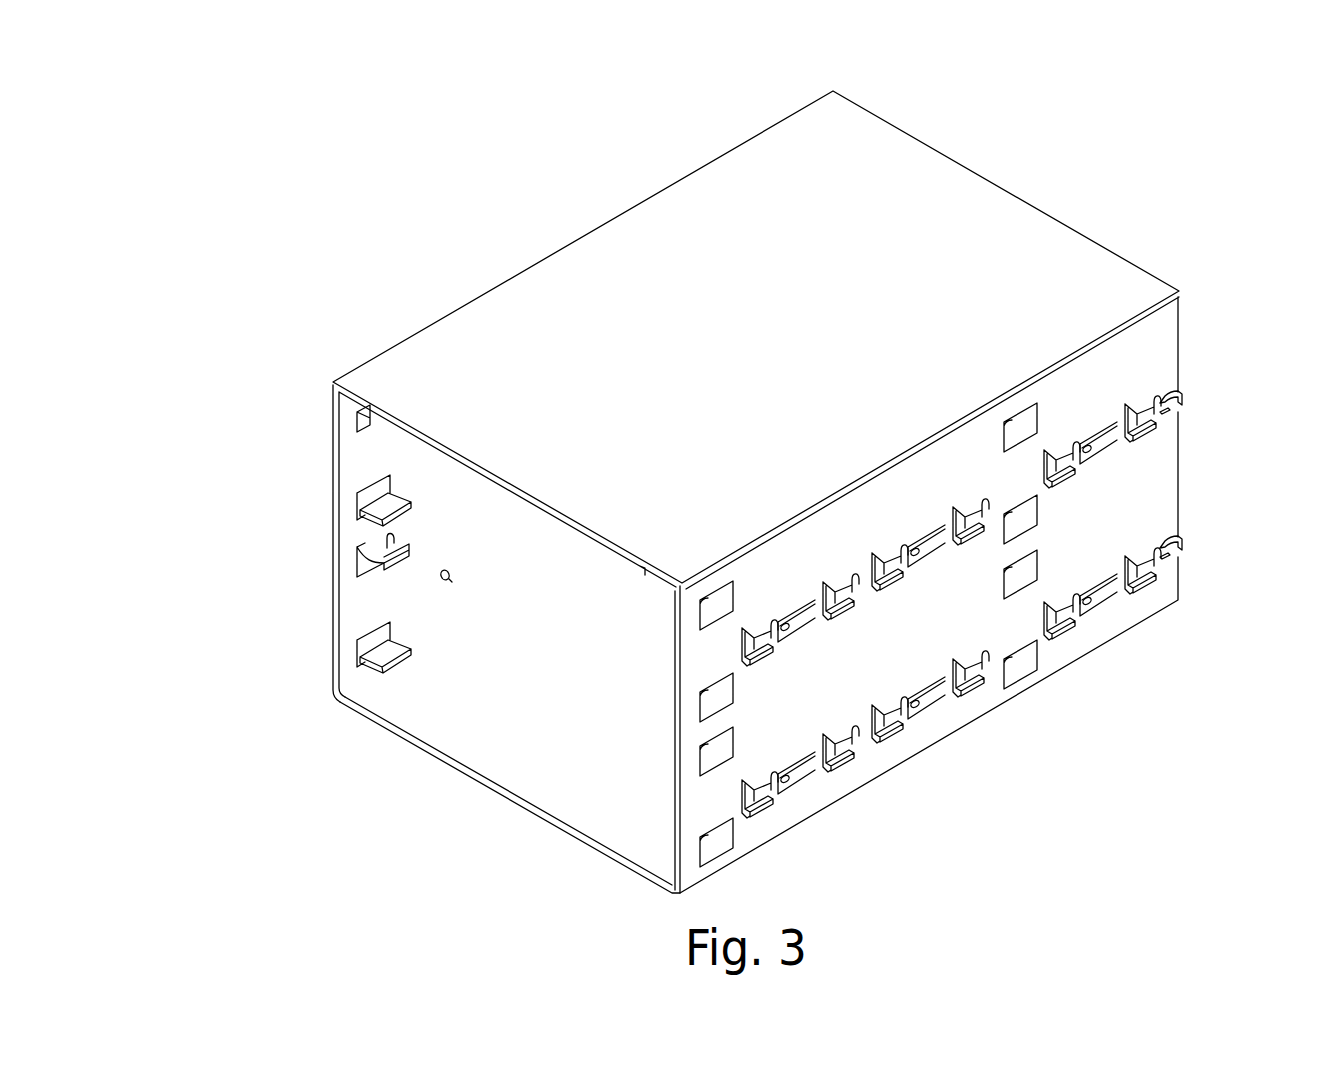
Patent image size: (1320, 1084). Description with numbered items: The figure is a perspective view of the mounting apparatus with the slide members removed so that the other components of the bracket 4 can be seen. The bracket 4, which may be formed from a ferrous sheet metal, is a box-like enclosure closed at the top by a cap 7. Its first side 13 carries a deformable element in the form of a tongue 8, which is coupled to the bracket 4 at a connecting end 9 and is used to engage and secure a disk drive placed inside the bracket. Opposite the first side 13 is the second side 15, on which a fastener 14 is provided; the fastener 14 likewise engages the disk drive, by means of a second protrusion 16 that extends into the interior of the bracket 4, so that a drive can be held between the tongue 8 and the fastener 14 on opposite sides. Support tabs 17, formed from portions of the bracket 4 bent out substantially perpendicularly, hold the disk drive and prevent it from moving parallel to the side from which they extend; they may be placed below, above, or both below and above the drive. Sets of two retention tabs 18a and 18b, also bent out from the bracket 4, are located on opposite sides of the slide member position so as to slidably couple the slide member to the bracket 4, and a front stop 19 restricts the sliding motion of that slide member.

The bracket 4 is at (948, 810).
The cap 7 is at (698, 358).
The tongue 8 is at (795, 622).
The connecting end 9 is at (812, 762).
The first side 13 is at (671, 741).
The fastener 14 is at (447, 604).
The second side 15 is at (337, 543).
The second protrusion 16 is at (452, 582).
The support tab 17 is at (398, 664).
The retention tab 18a is at (1158, 582).
The retention tab 18b is at (1147, 553).
The front stop 19 is at (1185, 410).